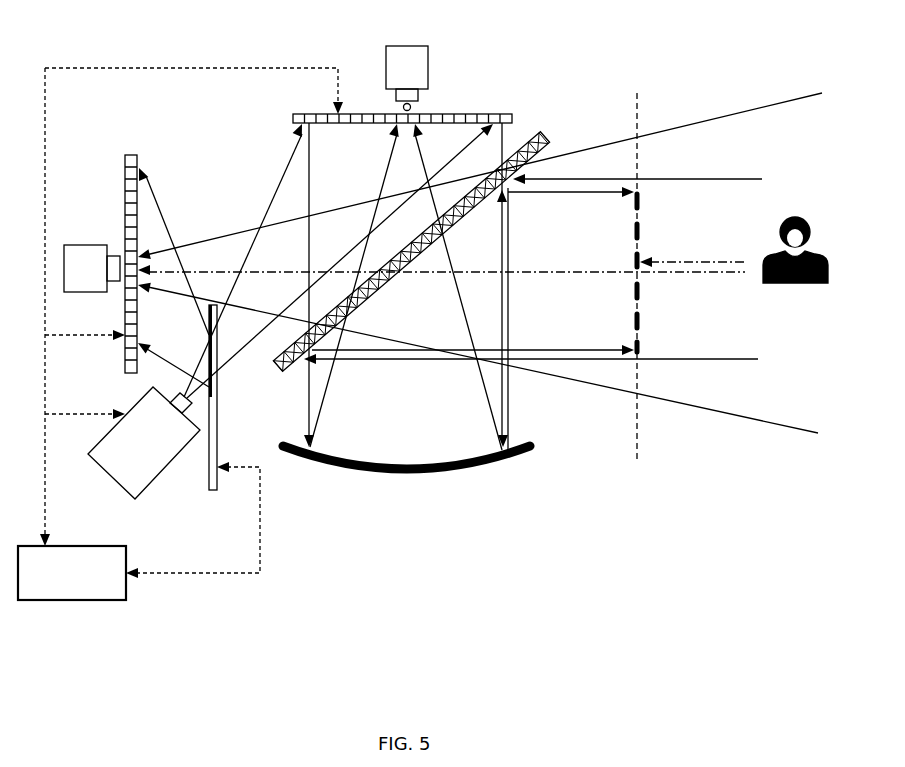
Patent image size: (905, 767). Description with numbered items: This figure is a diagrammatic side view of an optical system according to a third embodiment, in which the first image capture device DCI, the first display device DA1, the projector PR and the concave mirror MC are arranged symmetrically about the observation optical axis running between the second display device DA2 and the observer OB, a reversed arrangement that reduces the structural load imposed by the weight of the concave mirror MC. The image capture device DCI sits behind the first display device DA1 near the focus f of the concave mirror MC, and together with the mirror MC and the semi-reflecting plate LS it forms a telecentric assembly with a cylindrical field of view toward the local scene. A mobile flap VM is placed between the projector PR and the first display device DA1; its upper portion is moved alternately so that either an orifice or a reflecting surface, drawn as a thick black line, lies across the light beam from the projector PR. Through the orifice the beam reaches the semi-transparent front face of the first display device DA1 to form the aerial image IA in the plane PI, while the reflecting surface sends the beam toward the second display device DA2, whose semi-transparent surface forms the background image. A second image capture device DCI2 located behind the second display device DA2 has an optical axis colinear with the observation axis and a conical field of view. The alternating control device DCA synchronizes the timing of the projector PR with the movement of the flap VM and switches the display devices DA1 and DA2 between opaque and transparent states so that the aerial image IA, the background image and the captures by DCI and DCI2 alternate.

The first image capture device DCI is at (405, 46).
The focus of the concave mirror f is at (418, 106).
The first display device DA1 is at (303, 113).
The second display device DA2 is at (125, 172).
The second image capture device DCI2 is at (82, 245).
The semi-reflecting plate LS is at (426, 228).
The plane PI is at (637, 118).
The aerial image IA is at (640, 232).
The observer OB is at (795, 260).
The concave mirror MC is at (500, 462).
The mobile flap VM is at (207, 469).
The projector PR is at (152, 485).
The alternating electronic control device DCA is at (97, 600).